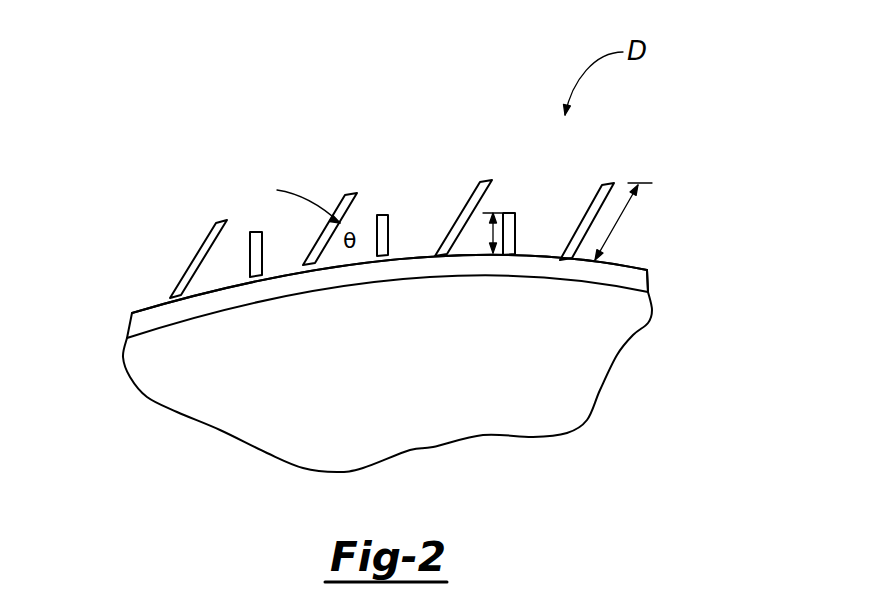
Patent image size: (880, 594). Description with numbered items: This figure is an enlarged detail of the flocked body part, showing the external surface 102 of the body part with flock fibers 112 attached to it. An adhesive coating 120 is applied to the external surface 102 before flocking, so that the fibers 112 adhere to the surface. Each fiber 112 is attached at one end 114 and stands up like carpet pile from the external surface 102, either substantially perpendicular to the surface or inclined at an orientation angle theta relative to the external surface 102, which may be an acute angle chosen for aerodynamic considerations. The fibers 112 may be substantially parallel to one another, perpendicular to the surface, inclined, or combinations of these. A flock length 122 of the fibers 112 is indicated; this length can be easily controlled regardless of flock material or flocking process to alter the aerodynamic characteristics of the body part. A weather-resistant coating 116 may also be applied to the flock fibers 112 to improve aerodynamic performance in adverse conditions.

The external surface 102 is at (532, 273).
The fibers 112 is at (194, 263).
The end 114 is at (363, 262).
The weather-resistant coating 116 is at (202, 258).
The adhesive coating 120 is at (632, 278).
The flock length 122 is at (491, 237).